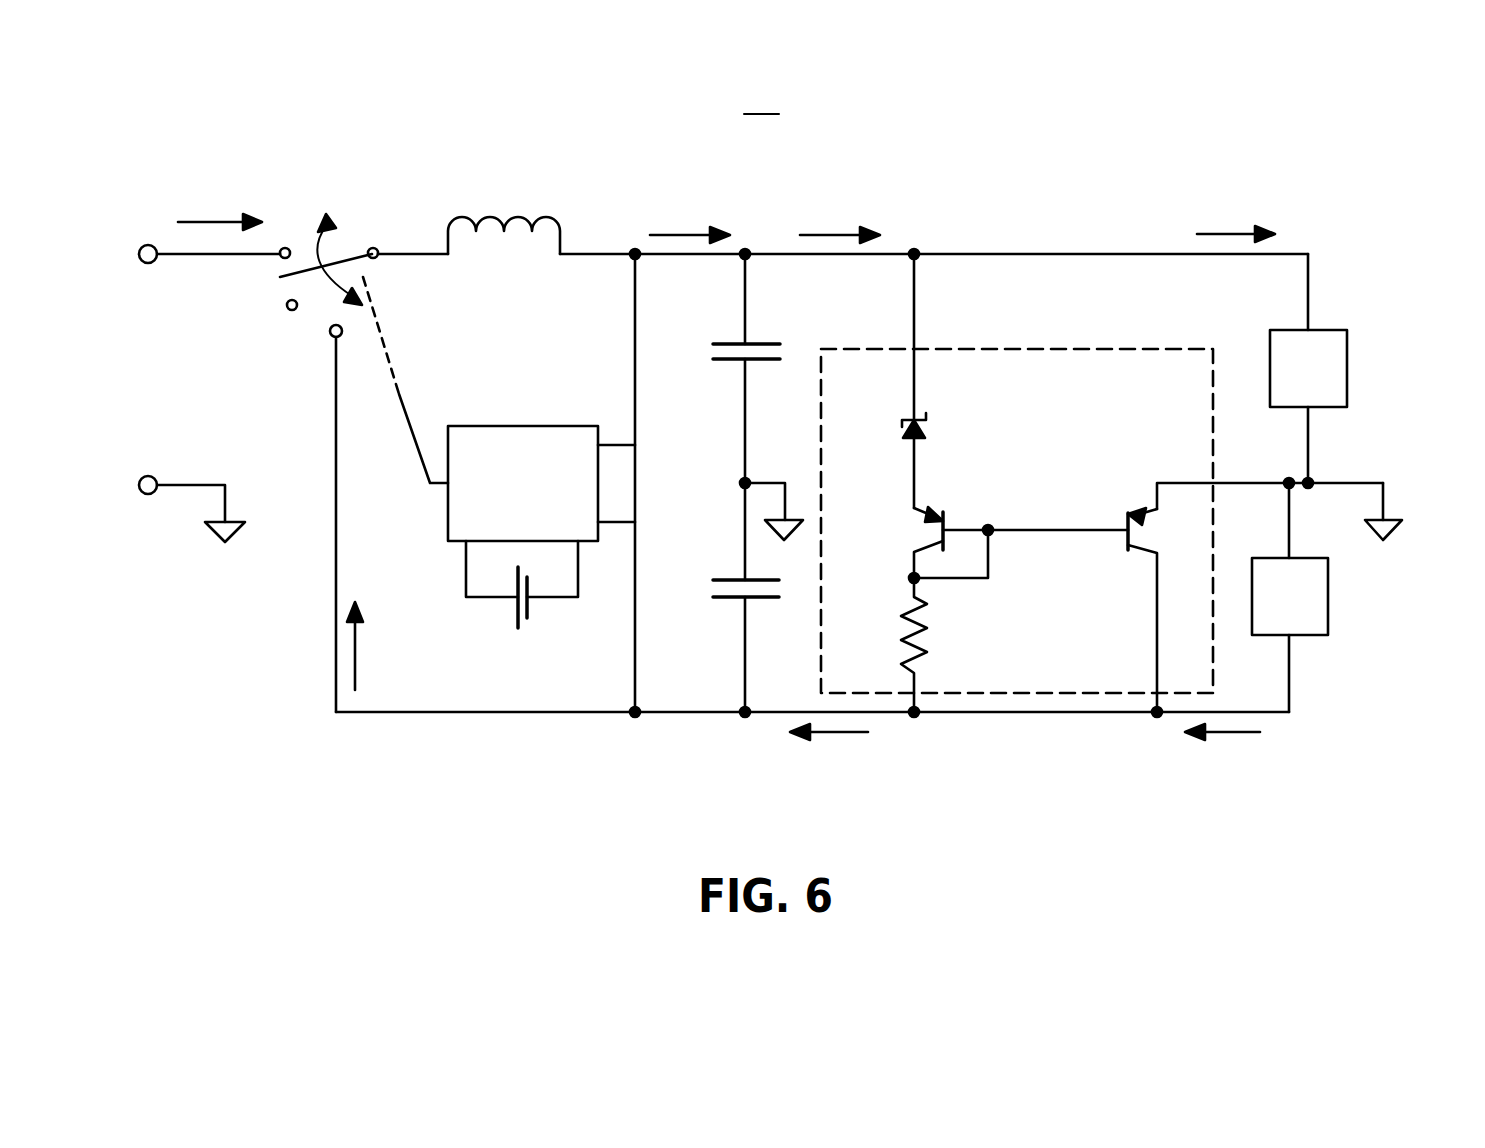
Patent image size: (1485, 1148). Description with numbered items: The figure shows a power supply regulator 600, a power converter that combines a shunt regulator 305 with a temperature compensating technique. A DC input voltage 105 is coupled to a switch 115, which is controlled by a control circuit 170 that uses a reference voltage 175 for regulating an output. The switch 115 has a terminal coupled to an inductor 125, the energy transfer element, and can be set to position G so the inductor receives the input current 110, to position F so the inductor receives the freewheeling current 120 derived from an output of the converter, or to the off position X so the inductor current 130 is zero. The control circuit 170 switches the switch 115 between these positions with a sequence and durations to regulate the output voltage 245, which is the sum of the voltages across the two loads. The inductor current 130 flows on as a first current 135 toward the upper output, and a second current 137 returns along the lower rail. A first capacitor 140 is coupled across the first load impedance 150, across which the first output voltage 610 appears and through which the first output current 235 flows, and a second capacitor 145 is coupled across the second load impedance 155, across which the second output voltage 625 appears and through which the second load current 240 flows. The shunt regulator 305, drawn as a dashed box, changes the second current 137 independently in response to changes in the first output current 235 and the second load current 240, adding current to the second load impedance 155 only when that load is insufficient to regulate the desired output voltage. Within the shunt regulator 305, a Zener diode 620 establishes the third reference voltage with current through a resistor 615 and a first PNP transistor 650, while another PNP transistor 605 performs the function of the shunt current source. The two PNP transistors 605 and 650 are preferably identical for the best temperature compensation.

The power supply regulator 600 is at (761, 101).
The input current I_G 110 is at (186, 212).
The input voltage V_G 105 is at (163, 349).
The switch S_1 115 is at (348, 212).
The inductor L_1 125 is at (504, 208).
The inductor current I_L 130 is at (708, 219).
The current I_1 135 is at (838, 219).
The output current I_Z1 235 is at (1236, 215).
The control circuit 170 is at (510, 420).
The reference voltage V_REF1 175 is at (502, 616).
The freewheeling current I_F 120 is at (370, 636).
The capacitor C_1 140 is at (730, 330).
The output voltage V_O 245 is at (662, 466).
The capacitor C_2 145 is at (726, 612).
The shunt regulator 305 is at (1072, 342).
The Zener diode 620 is at (906, 410).
The PNP transistor 650 is at (914, 530).
The resistor R_2 615 is at (892, 632).
The PNP transistor 605 is at (1120, 550).
The load impedance Z_1 150 is at (1298, 324).
The first output voltage 610 is at (1385, 348).
The load impedance Z_2 155 is at (1310, 644).
The second output voltage 625 is at (1366, 578).
The current I_2 137 is at (822, 748).
The load current I_Z2 240 is at (1222, 748).